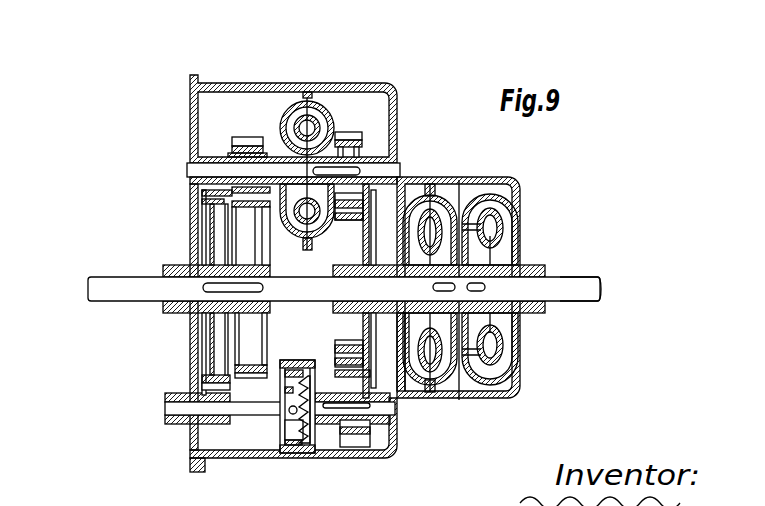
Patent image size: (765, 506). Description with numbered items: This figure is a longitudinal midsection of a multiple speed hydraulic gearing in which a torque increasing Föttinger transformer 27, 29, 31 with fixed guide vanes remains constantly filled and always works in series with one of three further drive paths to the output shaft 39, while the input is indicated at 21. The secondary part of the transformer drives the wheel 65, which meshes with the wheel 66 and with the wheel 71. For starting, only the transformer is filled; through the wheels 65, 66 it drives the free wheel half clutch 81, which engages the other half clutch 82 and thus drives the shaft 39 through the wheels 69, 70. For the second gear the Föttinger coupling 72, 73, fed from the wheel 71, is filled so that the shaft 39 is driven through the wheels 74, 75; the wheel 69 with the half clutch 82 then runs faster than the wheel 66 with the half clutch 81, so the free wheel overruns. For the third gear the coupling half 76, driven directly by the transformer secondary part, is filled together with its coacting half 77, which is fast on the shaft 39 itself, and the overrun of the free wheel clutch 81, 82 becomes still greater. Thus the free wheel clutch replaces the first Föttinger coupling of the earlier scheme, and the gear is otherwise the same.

The main shaft 21 is at (600, 287).
The shaft 39 is at (100, 292).
The Föttinger transformer 27 is at (473, 258).
The Föttinger transformer 29 is at (478, 215).
The Föttinger transformer 31 is at (507, 234).
The wheel 65 is at (350, 356).
The wheel 66 is at (343, 380).
The wheel 69 is at (221, 425).
The wheel 70 is at (212, 353).
The wheel 71 is at (356, 196).
The Föttinger coupling 72 is at (314, 114).
The Föttinger coupling 73 is at (296, 135).
The wheel 74 is at (232, 148).
The wheel 75 is at (248, 228).
The coupling half 76 is at (400, 318).
The coupling half 77 is at (456, 379).
The free wheel half clutch 81 is at (312, 441).
The free wheel half clutch 82 is at (297, 453).